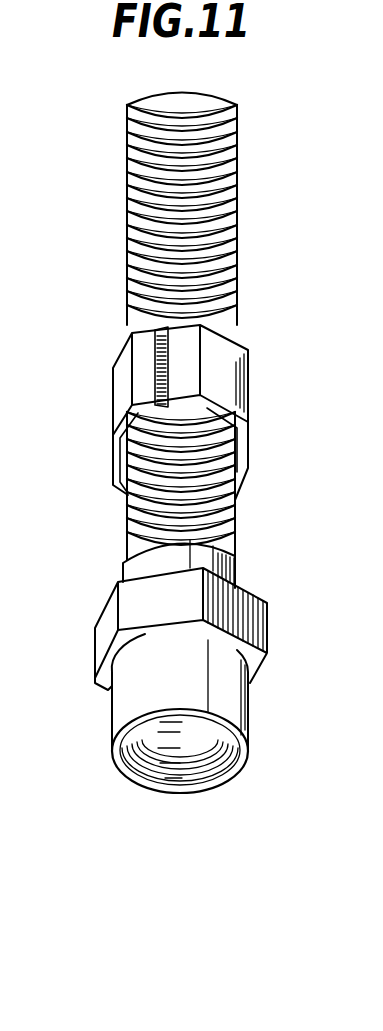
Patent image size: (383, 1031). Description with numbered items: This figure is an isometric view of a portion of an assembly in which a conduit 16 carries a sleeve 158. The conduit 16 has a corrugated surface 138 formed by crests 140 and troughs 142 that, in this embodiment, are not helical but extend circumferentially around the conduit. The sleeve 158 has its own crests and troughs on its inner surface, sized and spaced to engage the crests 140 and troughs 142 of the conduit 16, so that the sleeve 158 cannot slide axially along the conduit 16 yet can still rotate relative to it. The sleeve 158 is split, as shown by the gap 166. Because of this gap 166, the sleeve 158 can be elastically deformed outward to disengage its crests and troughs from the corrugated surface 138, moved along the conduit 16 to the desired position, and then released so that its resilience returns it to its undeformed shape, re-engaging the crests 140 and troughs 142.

The conduit 16 is at (237, 146).
The sleeve 158 is at (190, 401).
The gap 166 is at (165, 370).
The crests 140 is at (237, 487).
The troughs 142 is at (237, 505).
The corrugated surface 138 is at (127, 518).